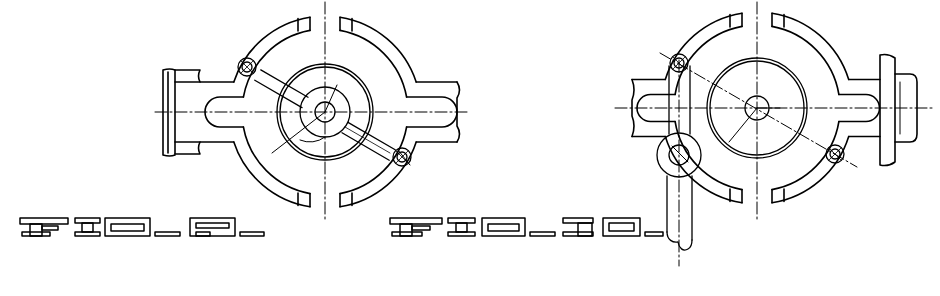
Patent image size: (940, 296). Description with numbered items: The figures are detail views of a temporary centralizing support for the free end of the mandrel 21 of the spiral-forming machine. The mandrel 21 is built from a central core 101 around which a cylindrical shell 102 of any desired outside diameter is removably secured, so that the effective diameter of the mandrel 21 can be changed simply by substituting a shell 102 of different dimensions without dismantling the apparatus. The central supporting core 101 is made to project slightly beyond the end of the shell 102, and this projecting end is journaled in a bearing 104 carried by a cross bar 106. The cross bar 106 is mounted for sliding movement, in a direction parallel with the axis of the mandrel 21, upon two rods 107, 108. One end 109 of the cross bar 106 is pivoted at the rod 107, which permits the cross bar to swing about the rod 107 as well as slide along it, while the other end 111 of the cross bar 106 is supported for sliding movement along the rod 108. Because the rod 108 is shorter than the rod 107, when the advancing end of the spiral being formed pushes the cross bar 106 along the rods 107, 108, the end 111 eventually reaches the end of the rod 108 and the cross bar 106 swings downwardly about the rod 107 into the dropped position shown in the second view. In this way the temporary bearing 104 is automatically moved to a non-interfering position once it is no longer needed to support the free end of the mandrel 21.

In FIG. 9, the mandrel 21 is at (362, 102).
In FIG. 10, the mandrel 21 is at (777, 74).
In FIG. 9, the central core 101 is at (312, 118).
In FIG. 10, the central core 101 is at (761, 105).
In FIG. 9, the cylindrical shell 102 is at (348, 78).
In FIG. 10, the cylindrical shell 102 is at (790, 121).
In FIG. 9, the bearing 104 is at (319, 140).
In FIG. 10, the bearing 104 is at (660, 160).
In FIG. 9, the cross bar 106 is at (372, 146).
In FIG. 10, the cross bar 106 is at (667, 195).
In FIG. 9, the rod 107 is at (258, 71).
In FIG. 10, the rod 107 is at (671, 64).
In FIG. 9, the rod 108 is at (410, 162).
In FIG. 10, the rod 108 is at (838, 163).
In FIG. 9, the end of the cross bar 109 is at (238, 65).
In FIG. 10, the end of the cross bar 109 is at (690, 62).
In FIG. 9, the other end of the cross bar 111 is at (418, 151).
In FIG. 10, the other end of the cross bar 111 is at (689, 247).